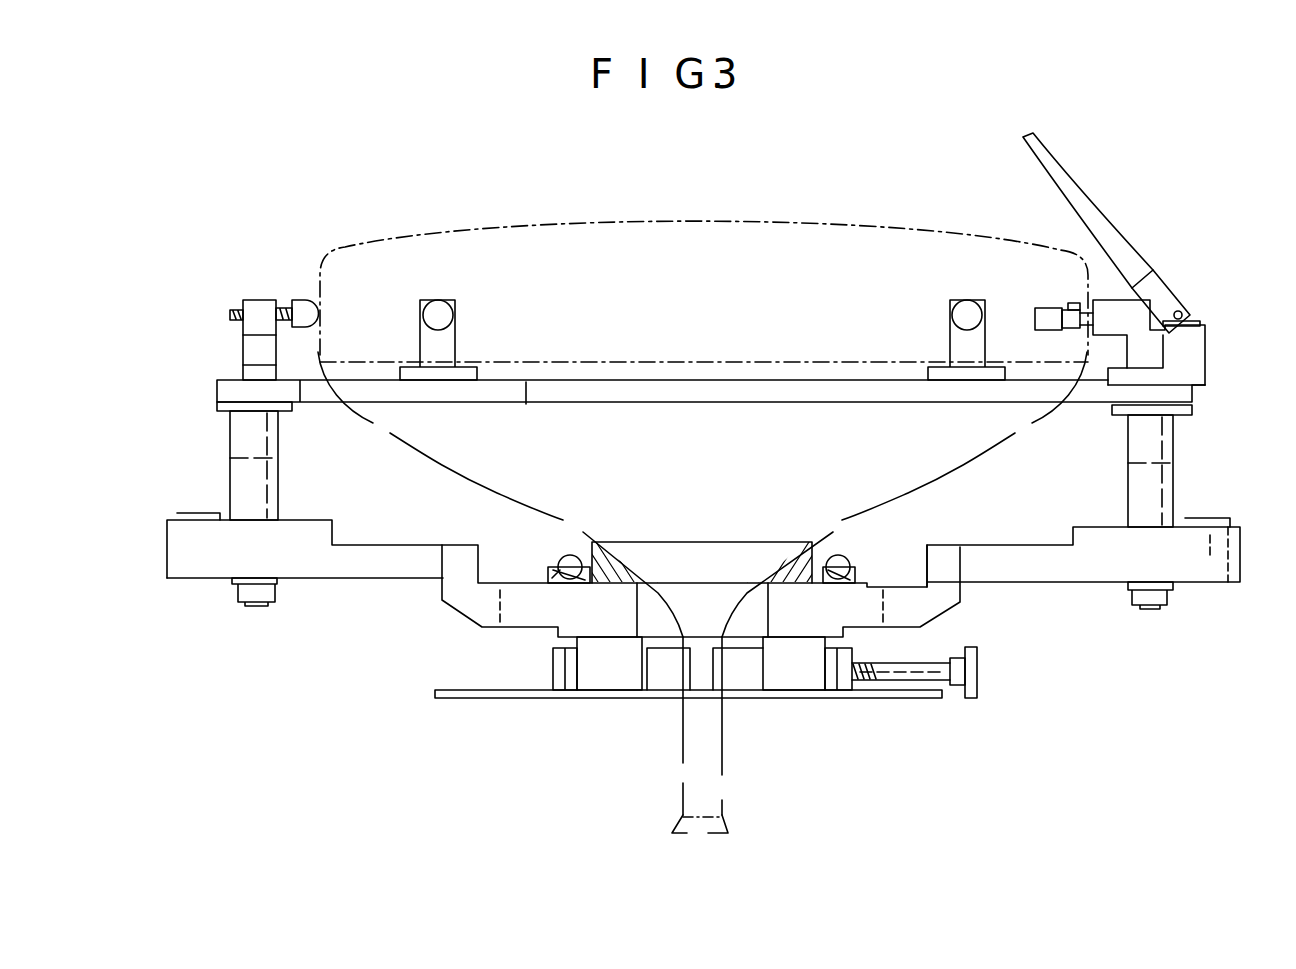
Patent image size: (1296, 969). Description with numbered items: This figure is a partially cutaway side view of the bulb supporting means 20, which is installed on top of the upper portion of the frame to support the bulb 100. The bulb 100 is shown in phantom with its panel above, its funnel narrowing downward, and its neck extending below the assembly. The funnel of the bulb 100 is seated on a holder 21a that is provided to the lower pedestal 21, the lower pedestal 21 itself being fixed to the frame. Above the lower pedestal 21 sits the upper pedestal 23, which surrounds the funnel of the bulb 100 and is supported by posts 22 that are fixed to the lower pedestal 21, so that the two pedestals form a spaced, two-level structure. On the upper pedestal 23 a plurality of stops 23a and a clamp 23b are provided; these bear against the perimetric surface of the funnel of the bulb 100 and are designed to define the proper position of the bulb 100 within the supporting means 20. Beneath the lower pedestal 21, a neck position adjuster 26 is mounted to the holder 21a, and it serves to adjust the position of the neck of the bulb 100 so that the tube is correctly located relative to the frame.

The bulb 100 is at (557, 268).
The bulb supporting means 20 is at (190, 292).
The lower pedestal 21 is at (390, 563).
The holder 21a is at (567, 585).
The posts 22 is at (1157, 492).
The upper pedestal 23 is at (1177, 397).
The stops 23a is at (304, 306).
The clamp 23b is at (1165, 302).
The neck position adjuster 26 is at (988, 670).